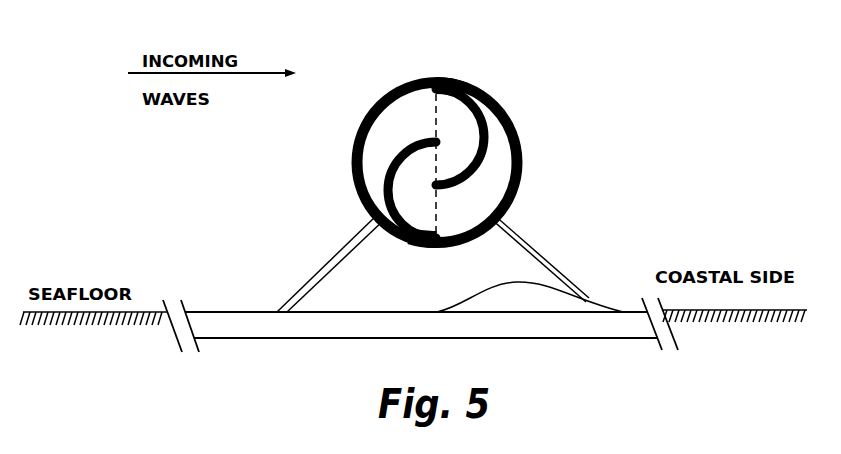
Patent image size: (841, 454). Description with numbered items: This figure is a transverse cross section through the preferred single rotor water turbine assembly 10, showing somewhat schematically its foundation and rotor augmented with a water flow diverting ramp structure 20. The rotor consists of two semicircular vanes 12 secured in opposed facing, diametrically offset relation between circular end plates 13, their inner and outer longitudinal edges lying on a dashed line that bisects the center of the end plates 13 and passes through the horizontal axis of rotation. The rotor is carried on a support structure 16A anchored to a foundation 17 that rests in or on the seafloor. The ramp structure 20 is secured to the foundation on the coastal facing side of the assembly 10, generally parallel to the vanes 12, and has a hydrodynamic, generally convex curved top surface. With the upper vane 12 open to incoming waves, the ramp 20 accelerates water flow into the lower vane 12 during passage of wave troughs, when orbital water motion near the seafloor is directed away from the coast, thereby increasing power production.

The horizontal axis water turbine assembly 10 is at (468, 148).
The semicircular vanes 12 is at (386, 181).
The circular end plates 13 is at (403, 89).
The support structure 16A is at (318, 250).
The foundation 17 is at (392, 322).
The water flow diverting ramp structure 20 is at (542, 282).